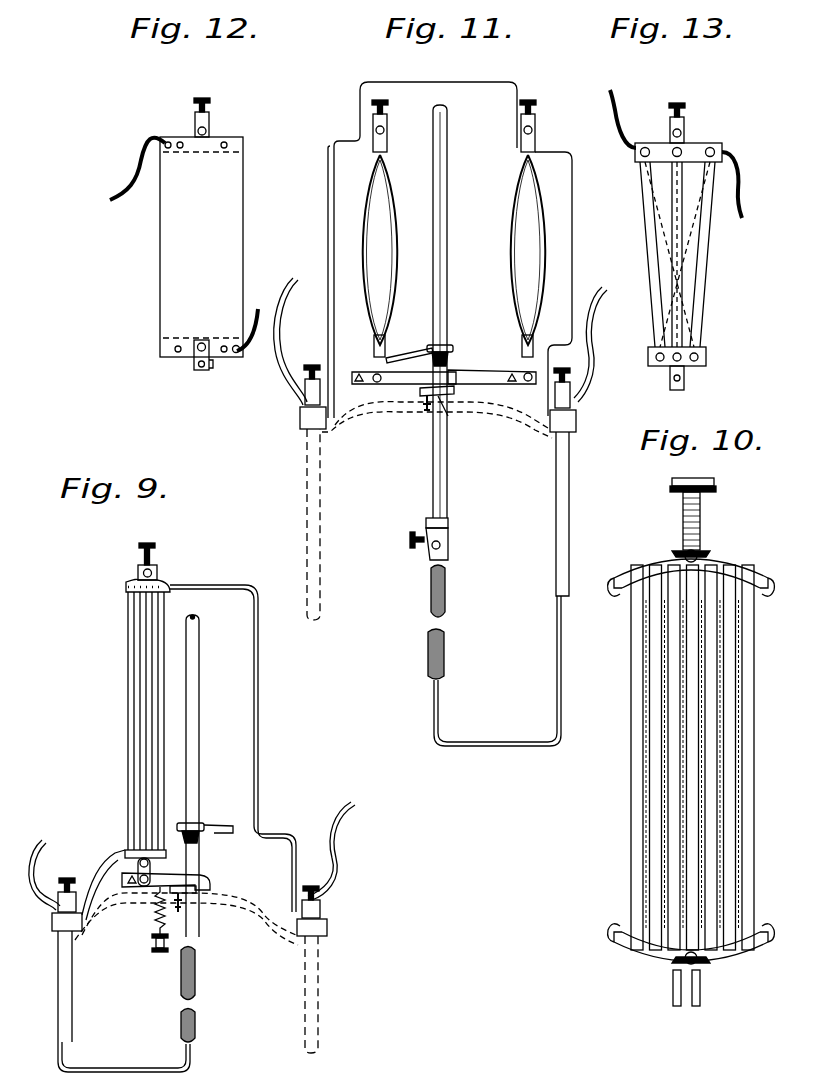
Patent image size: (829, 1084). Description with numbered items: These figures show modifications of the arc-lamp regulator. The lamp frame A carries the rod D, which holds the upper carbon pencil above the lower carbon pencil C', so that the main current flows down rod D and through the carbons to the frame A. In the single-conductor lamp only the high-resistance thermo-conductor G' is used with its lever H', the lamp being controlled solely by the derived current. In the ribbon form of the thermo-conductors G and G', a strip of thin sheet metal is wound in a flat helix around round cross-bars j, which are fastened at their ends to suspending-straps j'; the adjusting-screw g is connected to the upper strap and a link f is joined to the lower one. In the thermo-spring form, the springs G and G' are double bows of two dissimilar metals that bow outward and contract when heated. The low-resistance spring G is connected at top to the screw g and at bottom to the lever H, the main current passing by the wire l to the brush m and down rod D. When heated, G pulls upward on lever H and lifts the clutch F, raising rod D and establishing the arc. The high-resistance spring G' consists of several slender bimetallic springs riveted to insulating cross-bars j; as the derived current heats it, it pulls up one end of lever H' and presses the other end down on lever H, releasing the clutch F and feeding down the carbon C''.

In FIG. 12, the adjusting-screw g is at (209, 117).
In FIG. 11, the adjusting-screw g is at (461, 126).
In FIG. 13, the adjusting-screw g is at (685, 123).
In FIG. 10, the adjusting-screw g is at (688, 514).
In FIG. 12, the low-resistance thermo-conductor (thermo-spring) G is at (184, 247).
In FIG. 11, the low-resistance thermo-conductor (thermo-spring) G is at (380, 256).
In FIG. 11, the high-resistance thermo-conductor (thermo-spring) G' is at (528, 256).
In FIG. 13, the high-resistance thermo-conductor (thermo-spring) G' is at (686, 254).
In FIG. 9, the high-resistance thermo-conductor (thermo-spring) G' is at (135, 722).
In FIG. 12, the link f is at (193, 363).
In FIG. 13, the link f is at (684, 381).
In FIG. 10, the link f is at (675, 988).
In FIG. 11, the rod D is at (447, 311).
In FIG. 11, the wire l is at (409, 346).
In FIG. 11, the brush m is at (448, 355).
In FIG. 11, the lever H is at (404, 386).
In FIG. 11, the lever H' is at (492, 366).
In FIG. 9, the lever H' is at (166, 882).
In FIG. 11, the clutch F is at (439, 404).
In FIG. 11, the frame A is at (549, 514).
In FIG. 11, the lower carbon pencil C' is at (448, 591).
In FIG. 11, the carbon electrode C'' is at (448, 654).
In FIG. 13, the cross-bars j is at (676, 229).
In FIG. 10, the cross-bars j is at (691, 760).
In FIG. 10, the suspending-straps j' is at (691, 762).